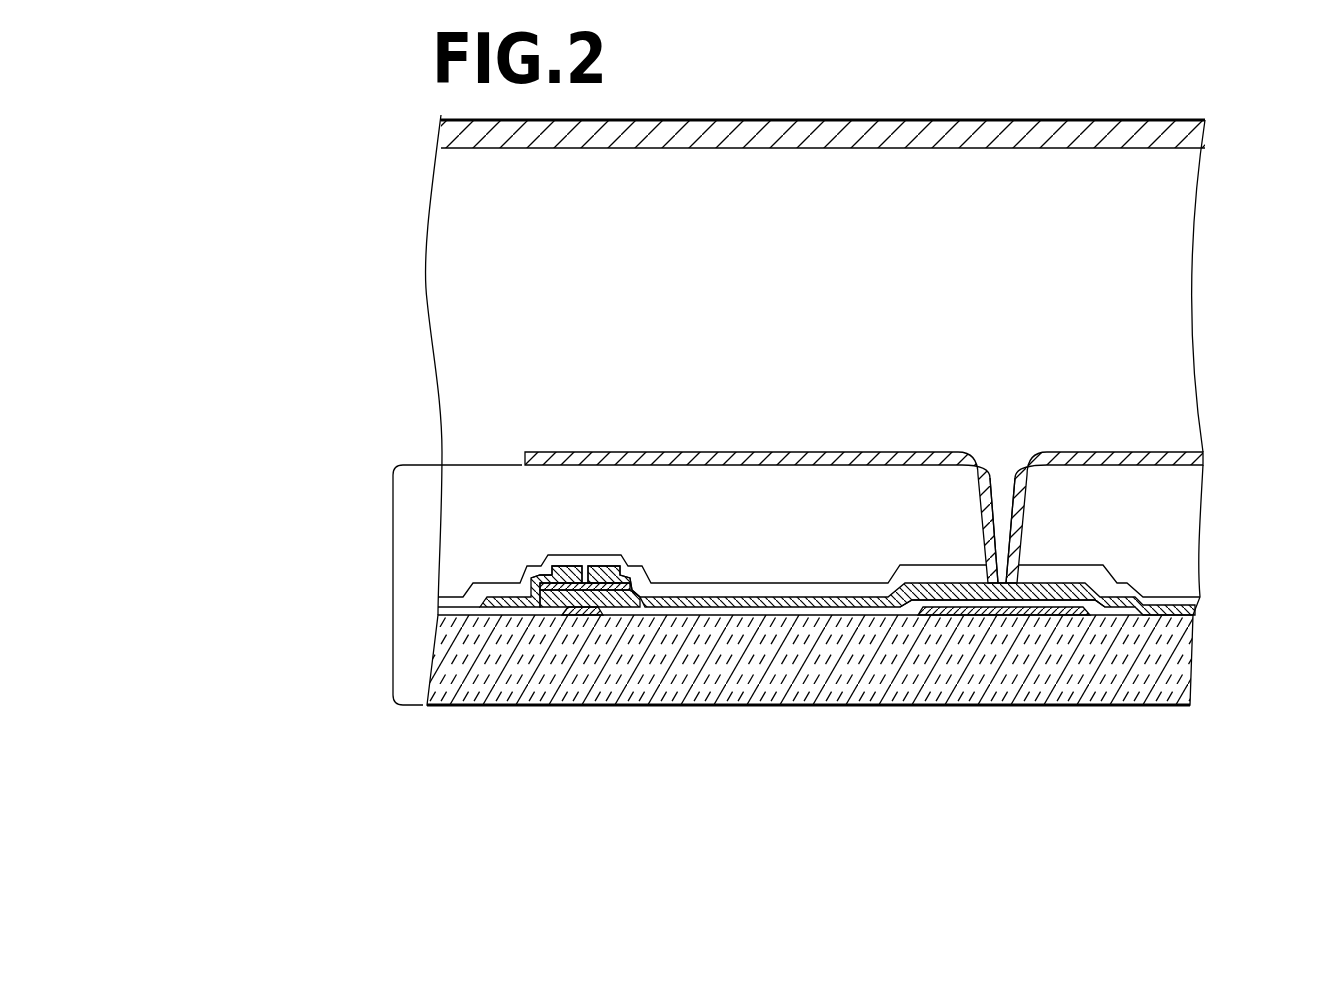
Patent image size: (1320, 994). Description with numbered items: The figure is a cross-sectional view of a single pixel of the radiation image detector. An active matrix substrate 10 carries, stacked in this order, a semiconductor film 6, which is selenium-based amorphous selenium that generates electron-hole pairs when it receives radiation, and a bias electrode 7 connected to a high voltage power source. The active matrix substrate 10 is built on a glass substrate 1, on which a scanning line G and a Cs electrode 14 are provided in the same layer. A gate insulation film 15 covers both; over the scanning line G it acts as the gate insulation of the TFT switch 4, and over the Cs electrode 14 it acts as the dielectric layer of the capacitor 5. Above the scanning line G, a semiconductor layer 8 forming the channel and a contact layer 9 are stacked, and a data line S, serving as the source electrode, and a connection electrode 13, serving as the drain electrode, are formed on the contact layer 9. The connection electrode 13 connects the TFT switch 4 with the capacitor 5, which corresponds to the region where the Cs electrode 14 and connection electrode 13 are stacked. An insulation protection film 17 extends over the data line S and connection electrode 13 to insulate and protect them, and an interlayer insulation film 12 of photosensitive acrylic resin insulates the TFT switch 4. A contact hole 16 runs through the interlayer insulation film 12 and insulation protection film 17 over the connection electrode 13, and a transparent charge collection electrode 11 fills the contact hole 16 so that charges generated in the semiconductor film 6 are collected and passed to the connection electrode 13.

The glass substrate 1 is at (448, 682).
The thin film transistor (TFT switch) 4 is at (636, 548).
The capacitor (Cs) 5 is at (1090, 607).
The semiconductor film 6 is at (803, 182).
The bias electrode 7 is at (997, 133).
The semiconductor layer 8 is at (600, 630).
The contact layer 9 is at (600, 625).
The active matrix substrate 10 is at (393, 572).
The charge collection electrode 11 is at (628, 452).
The interlayer insulation film 12 is at (817, 485).
The connection electrode 13 is at (895, 602).
The Cs electrode 14 is at (1000, 615).
The gate insulation film 15 is at (740, 612).
The contact hole 16 is at (1002, 478).
The insulation protection film 17 is at (855, 583).
The scanning line G is at (565, 612).
The data line S is at (493, 600).